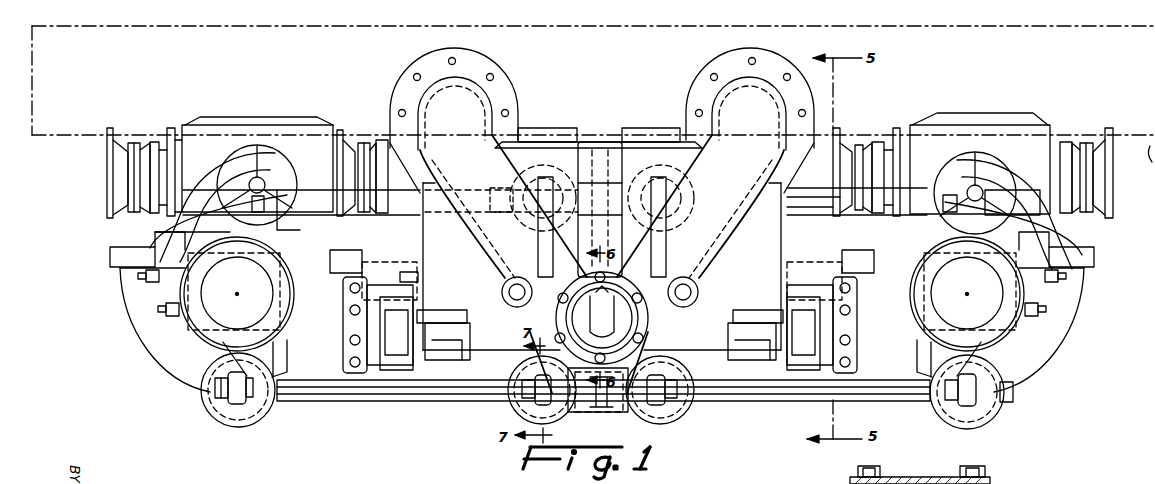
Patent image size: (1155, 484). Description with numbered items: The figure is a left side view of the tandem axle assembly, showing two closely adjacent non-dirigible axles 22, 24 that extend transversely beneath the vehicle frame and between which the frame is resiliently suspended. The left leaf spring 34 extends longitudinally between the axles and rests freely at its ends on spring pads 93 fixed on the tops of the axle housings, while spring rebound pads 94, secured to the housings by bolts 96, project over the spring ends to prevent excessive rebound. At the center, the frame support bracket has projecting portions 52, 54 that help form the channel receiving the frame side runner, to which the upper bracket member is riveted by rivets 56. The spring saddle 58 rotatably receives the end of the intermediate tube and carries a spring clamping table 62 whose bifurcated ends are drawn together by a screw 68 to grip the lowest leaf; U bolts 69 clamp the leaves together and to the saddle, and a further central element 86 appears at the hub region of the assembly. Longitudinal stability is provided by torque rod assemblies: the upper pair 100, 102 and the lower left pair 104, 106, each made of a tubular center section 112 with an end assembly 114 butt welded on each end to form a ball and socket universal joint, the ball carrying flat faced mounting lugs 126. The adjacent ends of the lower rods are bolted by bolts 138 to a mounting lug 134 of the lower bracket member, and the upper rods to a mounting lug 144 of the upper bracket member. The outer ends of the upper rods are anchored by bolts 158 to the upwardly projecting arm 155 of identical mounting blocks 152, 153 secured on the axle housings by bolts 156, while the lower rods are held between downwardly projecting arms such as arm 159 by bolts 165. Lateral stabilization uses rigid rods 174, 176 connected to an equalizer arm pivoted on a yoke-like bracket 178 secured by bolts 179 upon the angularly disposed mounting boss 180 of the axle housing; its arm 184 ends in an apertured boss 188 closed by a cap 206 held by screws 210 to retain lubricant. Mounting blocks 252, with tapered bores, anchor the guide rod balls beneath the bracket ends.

The axle 22 is at (113, 300).
The axle 24 is at (1090, 296).
The leaf spring 34 is at (492, 168).
The projecting portion of bracket member 52 is at (690, 80).
The projecting portion of bracket member 54 is at (505, 80).
The rivets 56 is at (456, 60).
The spring saddle 58 is at (500, 278).
The spring clamping table 62 is at (655, 275).
The screw 68 is at (518, 278).
The U bolts 69 is at (540, 244).
The central hub flange 86 is at (650, 326).
The spring pads 93 is at (602, 294).
The spring rebound pads 94 is at (140, 236).
The bolts 96 is at (163, 300).
The torque rod assembly 100 is at (352, 190).
The torque rod assembly 102 is at (815, 188).
The torque rod assembly 104 is at (350, 402).
The torque rod assembly 106 is at (812, 404).
The tubular center section 112 is at (400, 402).
The end assembly 114 is at (240, 426).
The mounting lugs 126 is at (232, 185).
The mounting lug 134 is at (568, 415).
The bolts 138 is at (682, 405).
The mounting lug 144 is at (568, 128).
The mounting block 152 is at (120, 265).
The mounting block 153 is at (1090, 252).
The upwardly projecting arm 155 is at (228, 170).
The bolts 156 is at (1036, 197).
The bolts 158 is at (278, 172).
The downwardly projecting arm 159 is at (222, 372).
The bolts 165 is at (212, 403).
The rigid rod 174 is at (755, 320).
The rigid rod 176 is at (855, 328).
The yoke-like bracket 178 is at (335, 354).
The bolts 179 is at (340, 338).
The mounting boss 180 is at (305, 400).
The arm of yoke-like bracket 184 is at (602, 275).
The boss 188 is at (420, 252).
The cap 206 is at (938, 477).
The screws 210 is at (858, 470).
The mounting block 252 is at (440, 360).